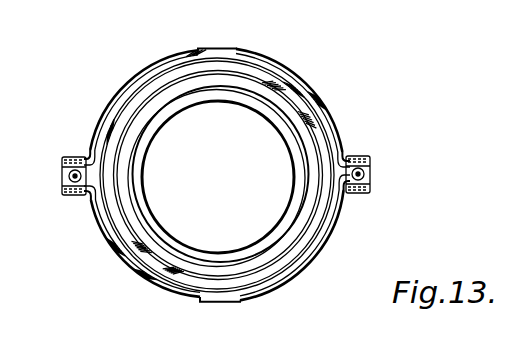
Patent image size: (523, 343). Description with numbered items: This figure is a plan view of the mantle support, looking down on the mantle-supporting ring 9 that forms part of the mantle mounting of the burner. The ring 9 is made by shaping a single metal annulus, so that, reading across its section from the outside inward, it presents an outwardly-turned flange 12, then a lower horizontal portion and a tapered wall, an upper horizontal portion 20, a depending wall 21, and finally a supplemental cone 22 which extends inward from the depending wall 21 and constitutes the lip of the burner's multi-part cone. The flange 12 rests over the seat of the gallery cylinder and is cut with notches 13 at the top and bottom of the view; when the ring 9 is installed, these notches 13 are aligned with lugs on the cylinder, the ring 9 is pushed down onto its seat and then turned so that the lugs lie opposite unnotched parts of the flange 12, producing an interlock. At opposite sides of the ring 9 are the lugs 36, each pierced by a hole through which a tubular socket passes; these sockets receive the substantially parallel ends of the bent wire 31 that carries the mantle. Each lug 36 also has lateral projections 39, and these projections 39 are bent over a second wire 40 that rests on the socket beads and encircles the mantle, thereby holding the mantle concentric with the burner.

The mantle-supporting ring 9 is at (333, 108).
The outwardly-turned flange 12 is at (300, 78).
The notches 13 is at (219, 48).
The upper horizontal portion 20 is at (310, 210).
The depending wall 21 is at (279, 229).
The supplemental cone 22 is at (290, 237).
The wire 31 is at (68, 177).
The lugs 36 is at (64, 192).
The lateral projections 39 is at (71, 157).
The wire 40 is at (346, 152).